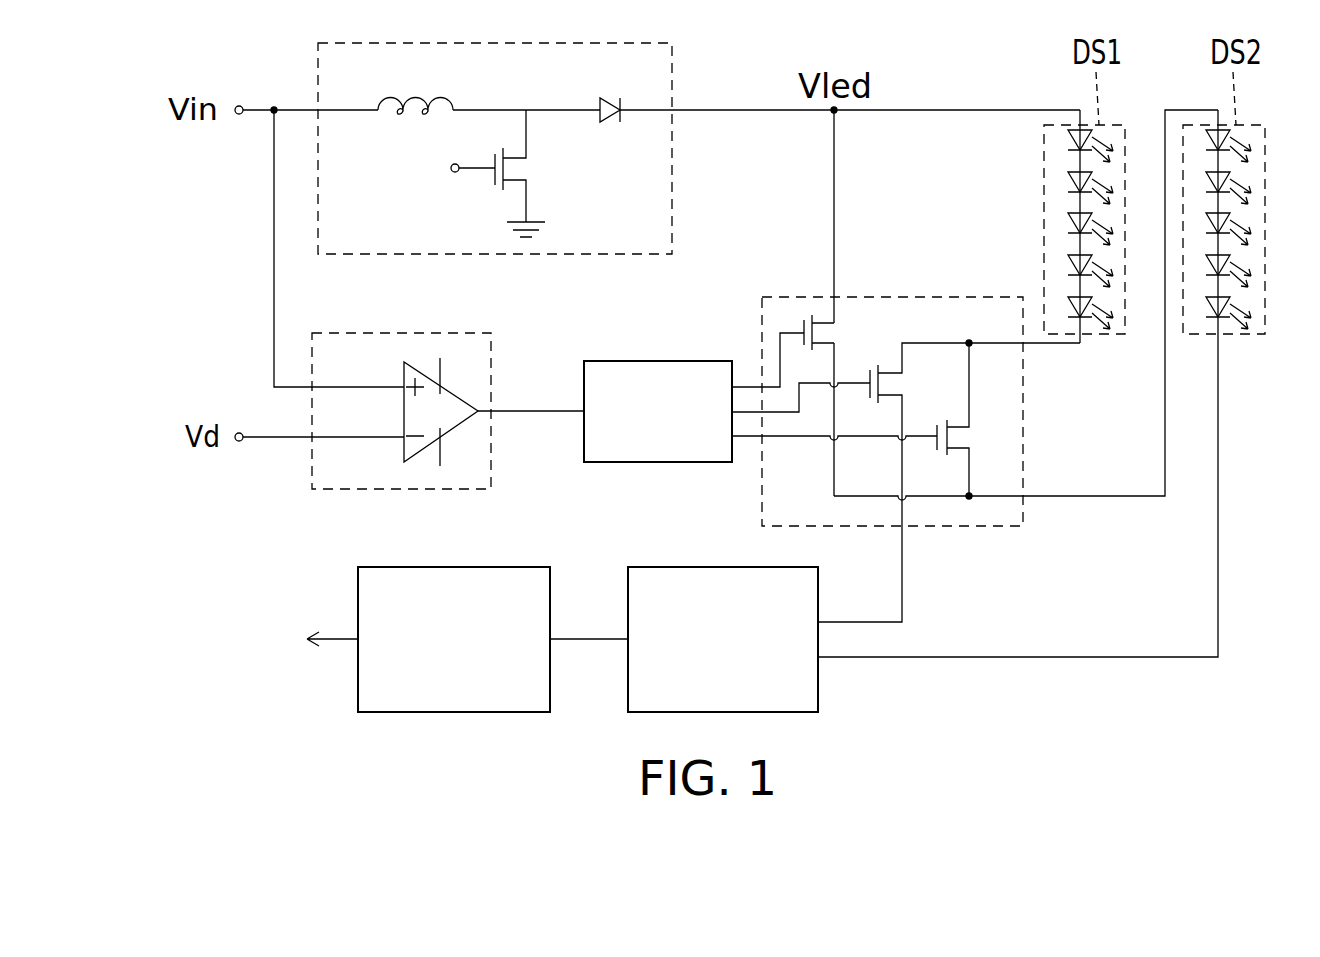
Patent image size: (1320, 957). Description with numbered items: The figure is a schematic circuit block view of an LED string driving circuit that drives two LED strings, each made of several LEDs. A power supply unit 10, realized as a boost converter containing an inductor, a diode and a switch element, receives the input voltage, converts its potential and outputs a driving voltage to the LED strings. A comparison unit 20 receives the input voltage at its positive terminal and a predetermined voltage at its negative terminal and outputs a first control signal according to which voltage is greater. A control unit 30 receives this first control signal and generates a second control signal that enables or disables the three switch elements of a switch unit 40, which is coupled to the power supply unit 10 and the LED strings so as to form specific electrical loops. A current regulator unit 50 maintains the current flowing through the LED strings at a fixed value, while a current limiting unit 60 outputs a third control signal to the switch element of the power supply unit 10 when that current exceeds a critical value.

The power supply unit 10 is at (674, 62).
The comparison unit 20 is at (356, 496).
The control unit 30 is at (660, 360).
The switch unit 40 is at (931, 292).
The current regulator unit 50 is at (719, 567).
The current limiting unit 60 is at (453, 567).